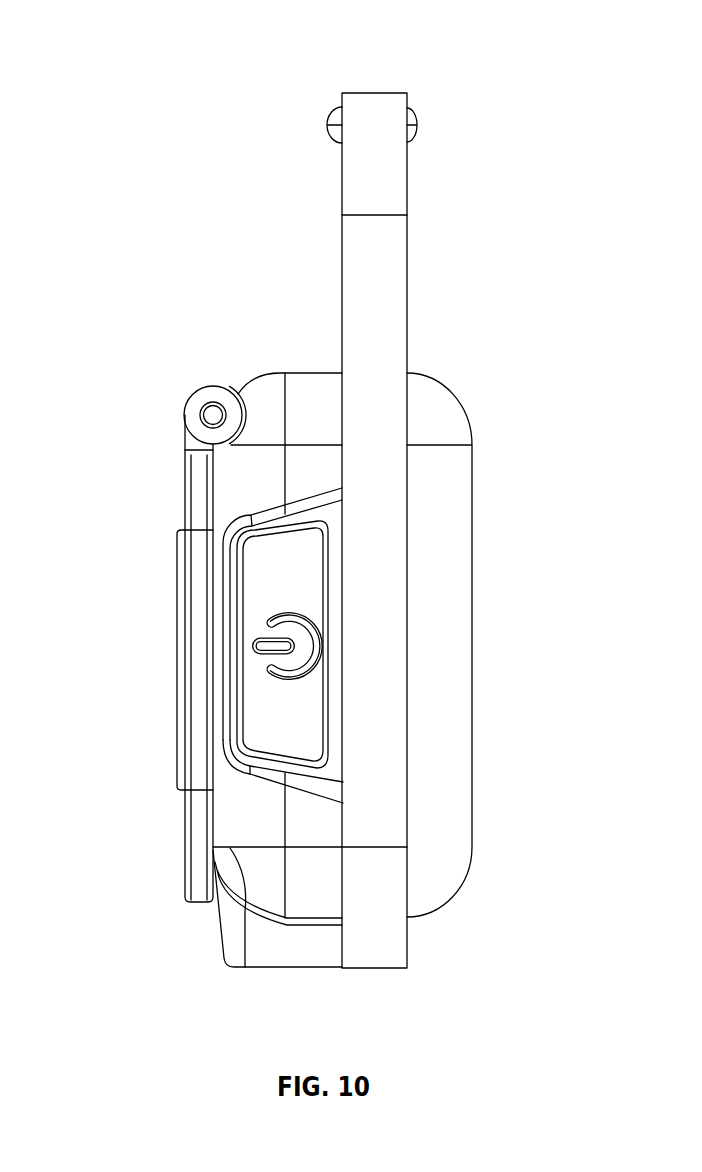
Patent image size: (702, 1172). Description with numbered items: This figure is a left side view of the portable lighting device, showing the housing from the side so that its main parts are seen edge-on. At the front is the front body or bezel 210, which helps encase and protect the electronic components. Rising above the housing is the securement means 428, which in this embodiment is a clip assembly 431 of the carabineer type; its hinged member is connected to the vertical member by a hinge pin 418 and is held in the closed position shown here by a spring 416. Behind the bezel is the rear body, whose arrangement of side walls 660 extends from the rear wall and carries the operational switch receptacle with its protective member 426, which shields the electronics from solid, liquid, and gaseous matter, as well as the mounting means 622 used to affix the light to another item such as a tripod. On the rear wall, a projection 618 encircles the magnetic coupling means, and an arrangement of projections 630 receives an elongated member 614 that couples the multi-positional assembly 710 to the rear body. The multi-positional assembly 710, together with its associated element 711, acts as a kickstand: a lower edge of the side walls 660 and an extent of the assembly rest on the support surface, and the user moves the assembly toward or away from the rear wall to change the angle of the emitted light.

The front body or bezel 210 is at (441, 404).
The spring 416 is at (378, 93).
The hinge pin 418 is at (412, 118).
The protective member 426 is at (268, 612).
The securement means 428 is at (434, 30).
The clip assembly 431 is at (285, 542).
The elongated member 614 is at (213, 412).
The projection 618 is at (177, 617).
The mounting means 622 is at (235, 931).
The arrangement of projections 630 is at (193, 407).
The arrangement of side walls 660 is at (325, 893).
The multi-positional assembly 710 is at (187, 803).
The lever arm 711 is at (199, 658).